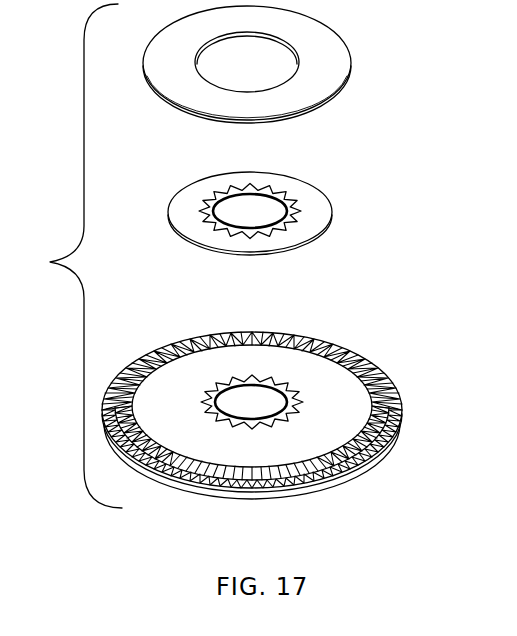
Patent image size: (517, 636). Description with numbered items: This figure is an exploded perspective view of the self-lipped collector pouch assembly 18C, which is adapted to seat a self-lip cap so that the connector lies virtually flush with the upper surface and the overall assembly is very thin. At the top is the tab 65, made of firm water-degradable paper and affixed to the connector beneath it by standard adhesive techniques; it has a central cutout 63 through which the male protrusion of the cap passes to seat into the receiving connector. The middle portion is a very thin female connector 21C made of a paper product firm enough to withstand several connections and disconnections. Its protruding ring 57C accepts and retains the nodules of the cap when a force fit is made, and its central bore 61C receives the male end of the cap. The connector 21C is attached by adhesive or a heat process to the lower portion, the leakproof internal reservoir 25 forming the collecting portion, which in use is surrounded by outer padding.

The self-lipped collector pouch assembly 18C is at (65, 256).
The central cutout 63 is at (283, 60).
The tab 65 is at (352, 80).
The protruding ring 57C is at (297, 200).
The central bore 61C is at (262, 218).
The female connector 21C is at (310, 242).
The leakproof internal reservoir 25 is at (310, 447).